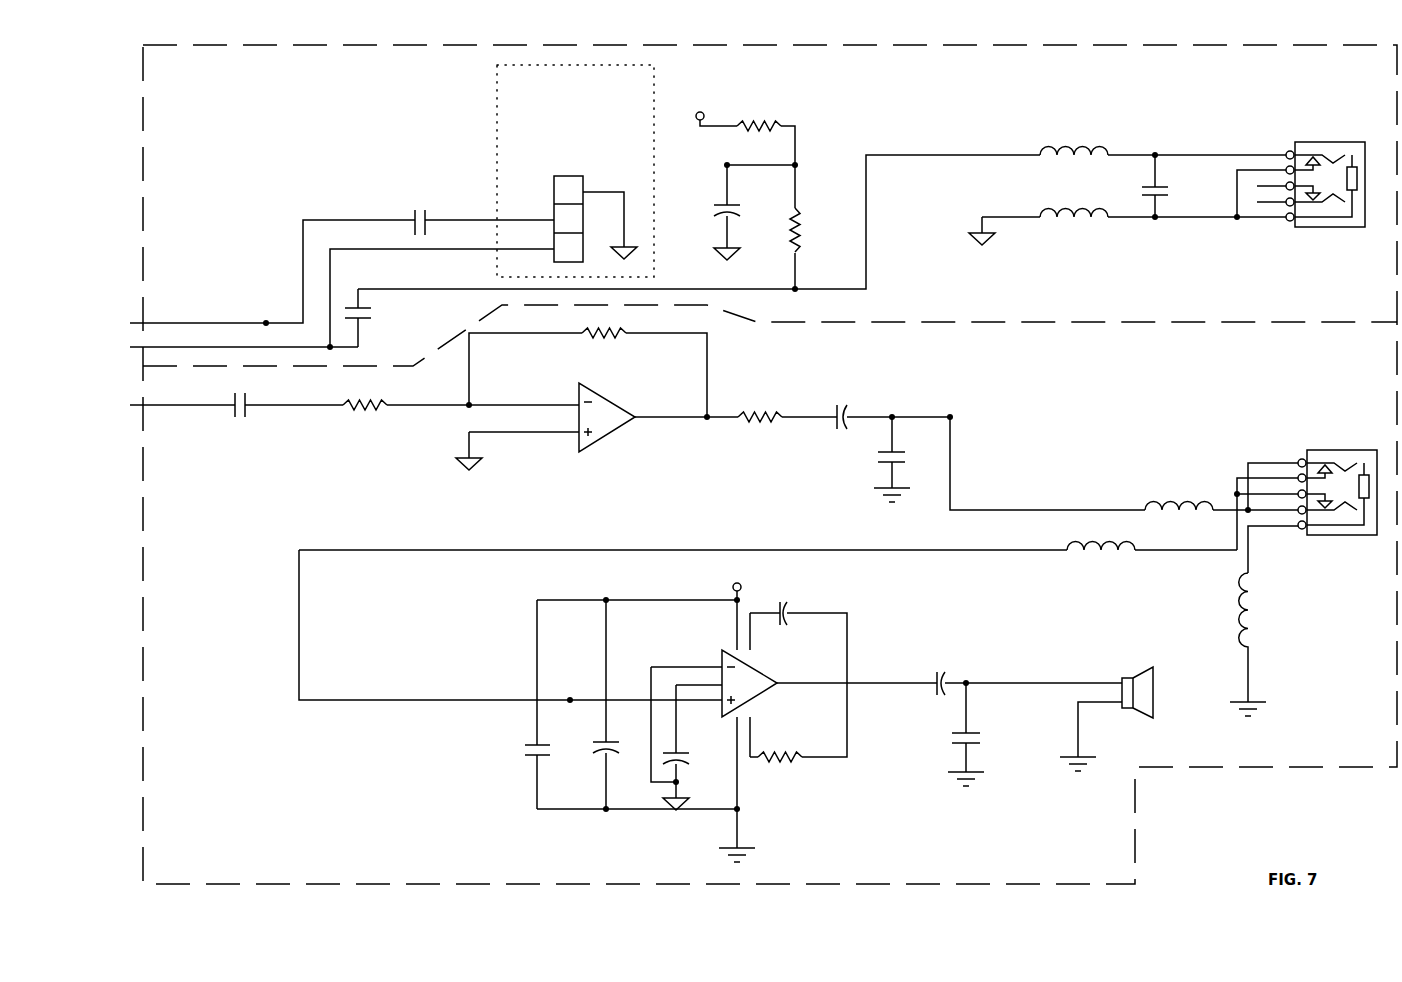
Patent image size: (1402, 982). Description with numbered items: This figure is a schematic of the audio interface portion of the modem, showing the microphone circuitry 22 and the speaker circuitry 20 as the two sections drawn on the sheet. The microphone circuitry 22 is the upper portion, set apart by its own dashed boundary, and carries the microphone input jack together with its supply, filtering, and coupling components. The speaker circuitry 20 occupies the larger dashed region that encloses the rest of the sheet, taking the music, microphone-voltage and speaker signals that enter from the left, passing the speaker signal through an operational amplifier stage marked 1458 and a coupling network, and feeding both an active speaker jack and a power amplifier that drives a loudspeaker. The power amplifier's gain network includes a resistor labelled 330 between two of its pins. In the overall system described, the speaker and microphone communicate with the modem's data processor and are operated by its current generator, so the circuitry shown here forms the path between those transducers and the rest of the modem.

The speaker 20 is at (246, 770).
The microphone 22 is at (878, 108).
The feedback resistor 330 is at (783, 747).
The operational amplifier U17B 1458 is at (617, 417).